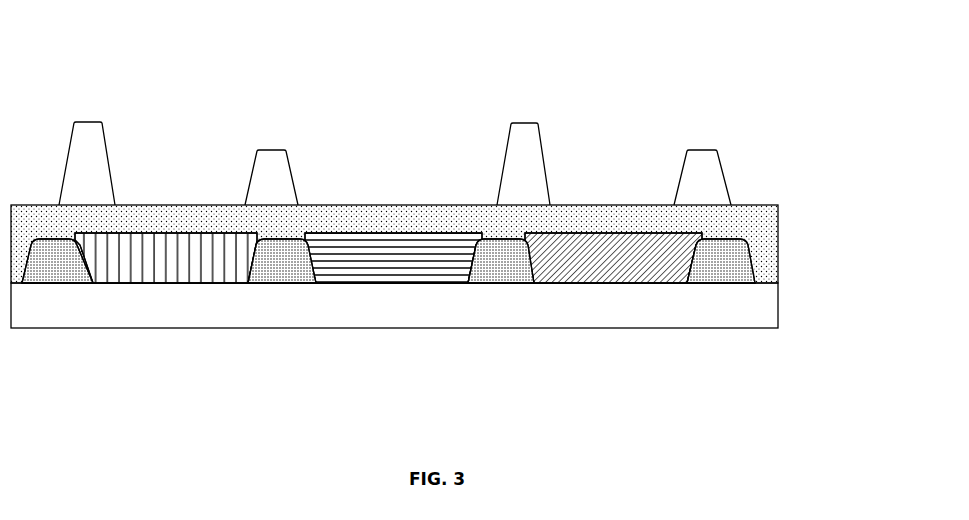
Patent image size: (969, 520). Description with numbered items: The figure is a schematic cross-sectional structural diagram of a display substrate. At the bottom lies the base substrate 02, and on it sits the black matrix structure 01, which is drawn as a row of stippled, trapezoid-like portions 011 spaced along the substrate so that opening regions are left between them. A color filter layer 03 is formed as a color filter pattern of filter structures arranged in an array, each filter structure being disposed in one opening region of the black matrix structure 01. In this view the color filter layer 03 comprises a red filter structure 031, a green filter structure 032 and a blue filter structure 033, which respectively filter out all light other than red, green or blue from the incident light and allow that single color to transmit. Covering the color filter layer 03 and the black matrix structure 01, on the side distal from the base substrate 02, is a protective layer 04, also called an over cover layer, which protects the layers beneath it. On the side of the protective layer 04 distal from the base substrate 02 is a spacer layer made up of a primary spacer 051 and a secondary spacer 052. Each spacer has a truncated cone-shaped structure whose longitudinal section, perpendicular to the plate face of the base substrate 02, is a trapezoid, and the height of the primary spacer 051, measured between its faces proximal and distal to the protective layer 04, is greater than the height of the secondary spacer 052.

The black matrix structure 01 is at (388, 341).
The pixel defining portion 011 is at (45, 262).
The base substrate 02 is at (748, 305).
The color filter layer 03 is at (388, 154).
The red filter structure 031 is at (175, 254).
The green filter structure 032 is at (402, 258).
The blue filter structure 033 is at (613, 181).
The protective layer 04 is at (753, 227).
The primary spacer 051 is at (87, 164).
The secondary spacer 052 is at (701, 183).